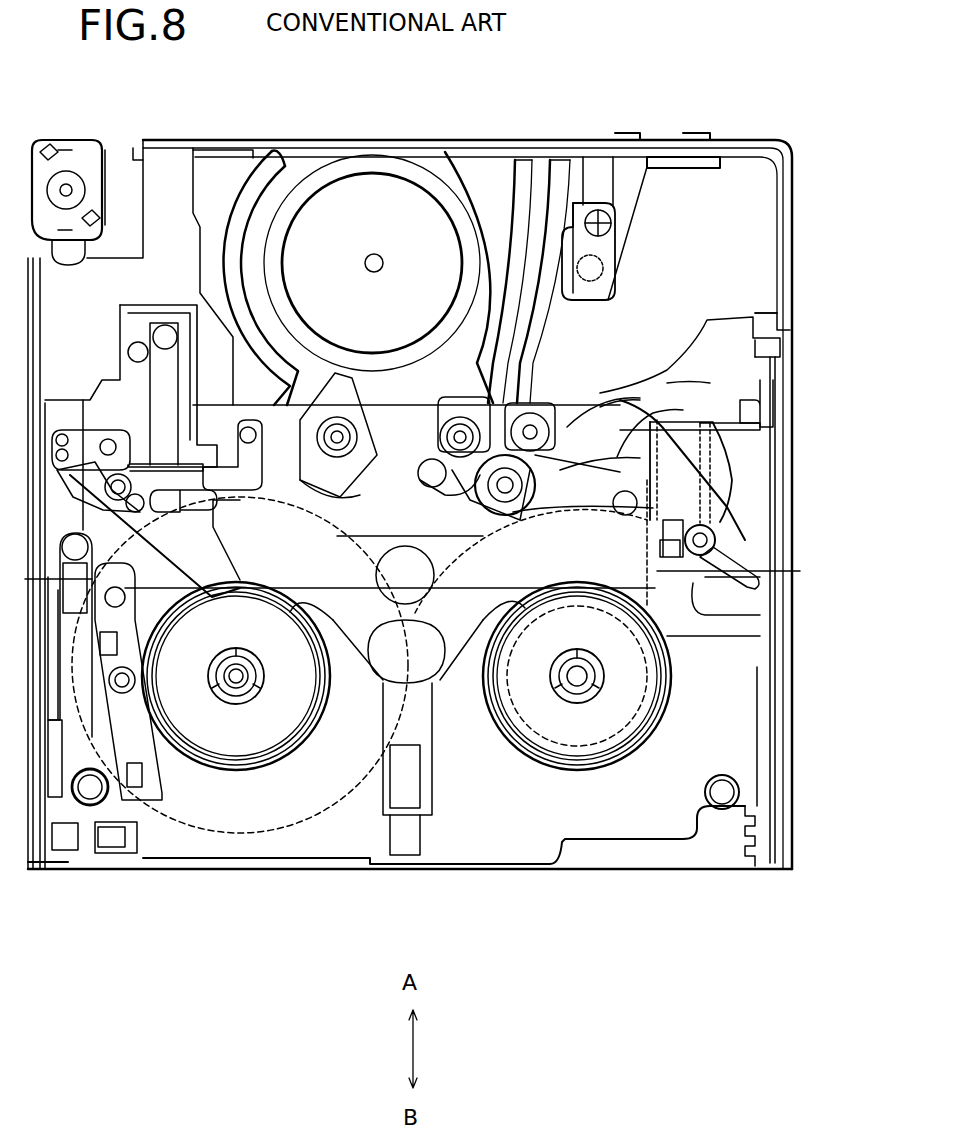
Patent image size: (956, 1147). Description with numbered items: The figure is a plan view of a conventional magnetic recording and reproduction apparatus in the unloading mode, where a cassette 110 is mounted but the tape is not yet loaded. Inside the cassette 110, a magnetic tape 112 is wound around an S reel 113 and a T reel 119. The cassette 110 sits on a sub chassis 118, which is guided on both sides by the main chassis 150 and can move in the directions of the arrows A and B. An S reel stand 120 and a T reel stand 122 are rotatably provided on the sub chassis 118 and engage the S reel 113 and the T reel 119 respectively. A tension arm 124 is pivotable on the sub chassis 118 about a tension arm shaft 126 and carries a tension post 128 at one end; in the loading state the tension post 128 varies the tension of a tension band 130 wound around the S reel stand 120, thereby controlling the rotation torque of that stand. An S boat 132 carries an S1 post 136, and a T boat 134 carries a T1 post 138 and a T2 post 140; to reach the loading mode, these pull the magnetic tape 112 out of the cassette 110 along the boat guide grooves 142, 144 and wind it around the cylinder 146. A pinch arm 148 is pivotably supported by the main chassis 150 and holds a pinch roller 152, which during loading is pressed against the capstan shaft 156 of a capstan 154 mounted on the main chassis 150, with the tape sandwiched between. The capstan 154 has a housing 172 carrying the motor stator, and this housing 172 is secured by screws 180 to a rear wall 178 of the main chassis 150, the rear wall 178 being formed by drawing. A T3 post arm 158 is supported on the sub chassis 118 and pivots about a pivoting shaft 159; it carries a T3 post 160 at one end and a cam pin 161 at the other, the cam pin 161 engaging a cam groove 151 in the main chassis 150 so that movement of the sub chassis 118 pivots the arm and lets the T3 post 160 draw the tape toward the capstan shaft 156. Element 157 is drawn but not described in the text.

The cassette 110 is at (695, 395).
The magnetic tape 112 is at (230, 402).
The S reel 113 is at (236, 840).
The sub chassis 118 is at (645, 835).
The T reel 119 is at (555, 722).
The S reel stand 120 is at (262, 733).
The T reel stand 122 is at (662, 702).
The tension arm 124 is at (260, 478).
The tension arm shaft 126 is at (112, 440).
The tension post 128 is at (262, 446).
The tension band 130 is at (195, 543).
The S boat 132 is at (366, 465).
The T boat 134 is at (455, 472).
The S1 post 136 is at (356, 425).
The T1 post 138 is at (428, 485).
The T2 post 140 is at (455, 427).
The boat guide groove 142 is at (276, 170).
The boat guide groove 144 is at (547, 147).
The cylinder 146 is at (370, 165).
The pinch arm 148 is at (533, 468).
The main chassis 150 is at (165, 148).
The cam groove 151 is at (78, 165).
The pinch roller 152 is at (510, 522).
The capstan 154 is at (752, 202).
The capstan shaft 156 is at (605, 302).
The block 157 is at (726, 420).
The T3 post arm 158 is at (720, 480).
The pivoting shaft 159 is at (690, 578).
The T3 post 160 is at (533, 413).
The cam pin 161 is at (790, 571).
The housing 172 is at (758, 280).
The rear wall 178 is at (505, 145).
The screws 180 is at (690, 134).